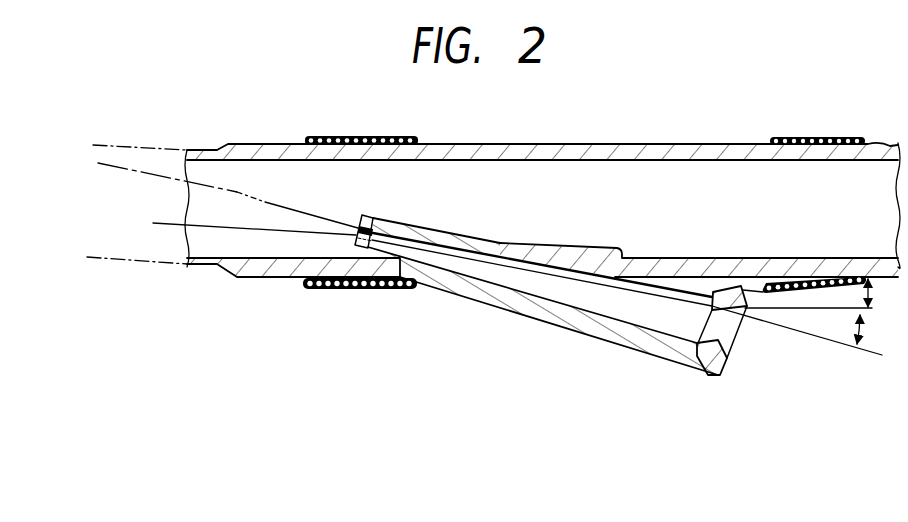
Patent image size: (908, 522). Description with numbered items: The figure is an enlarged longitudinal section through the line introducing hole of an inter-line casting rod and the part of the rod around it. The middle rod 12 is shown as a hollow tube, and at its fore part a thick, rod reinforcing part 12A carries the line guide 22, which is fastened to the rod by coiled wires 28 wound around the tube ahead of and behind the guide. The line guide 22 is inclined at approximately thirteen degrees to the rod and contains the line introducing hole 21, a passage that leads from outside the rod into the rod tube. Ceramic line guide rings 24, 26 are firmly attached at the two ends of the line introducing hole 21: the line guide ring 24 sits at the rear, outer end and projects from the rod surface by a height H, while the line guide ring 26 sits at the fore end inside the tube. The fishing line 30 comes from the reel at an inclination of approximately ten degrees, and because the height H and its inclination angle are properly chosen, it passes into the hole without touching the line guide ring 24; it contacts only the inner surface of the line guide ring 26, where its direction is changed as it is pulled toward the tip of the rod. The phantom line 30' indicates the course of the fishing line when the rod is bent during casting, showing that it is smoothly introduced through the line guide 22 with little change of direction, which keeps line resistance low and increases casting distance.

The middle rod 12 is at (588, 155).
The rod reinforcing part 12A is at (657, 148).
The line introducing hole 21 is at (521, 290).
The line guide 22 is at (591, 325).
The line guide ring 24 is at (727, 370).
The line guide ring 26 is at (362, 215).
The coiled wires 28 is at (826, 145).
The fishing line 30 is at (797, 353).
The phantom line 30' is at (228, 161).
The height of the line guide ring H is at (819, 293).